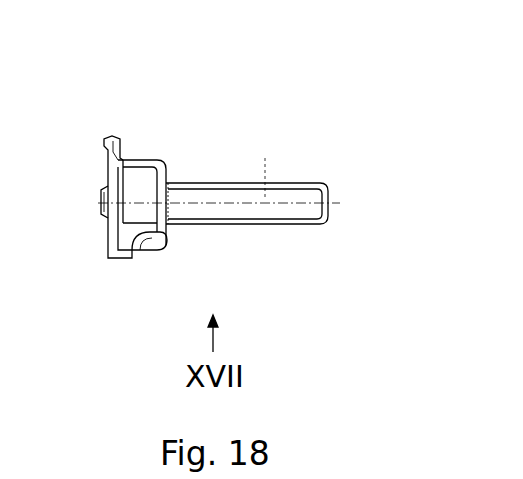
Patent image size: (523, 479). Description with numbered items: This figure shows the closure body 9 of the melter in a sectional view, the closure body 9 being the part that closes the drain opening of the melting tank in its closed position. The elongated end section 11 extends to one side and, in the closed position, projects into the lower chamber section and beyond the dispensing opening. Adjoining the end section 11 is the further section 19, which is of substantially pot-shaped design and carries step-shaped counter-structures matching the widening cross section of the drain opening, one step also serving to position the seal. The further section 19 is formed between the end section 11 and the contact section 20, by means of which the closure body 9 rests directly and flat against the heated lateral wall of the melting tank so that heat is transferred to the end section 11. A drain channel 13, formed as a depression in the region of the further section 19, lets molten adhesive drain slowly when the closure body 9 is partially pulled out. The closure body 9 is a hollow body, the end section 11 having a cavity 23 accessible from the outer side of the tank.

The closure body 9 is at (229, 189).
The end section 11 is at (247, 196).
The drain channel 13 is at (155, 246).
The further section 19 is at (137, 189).
The contact section 20 is at (104, 141).
The cavity 23 is at (215, 198).